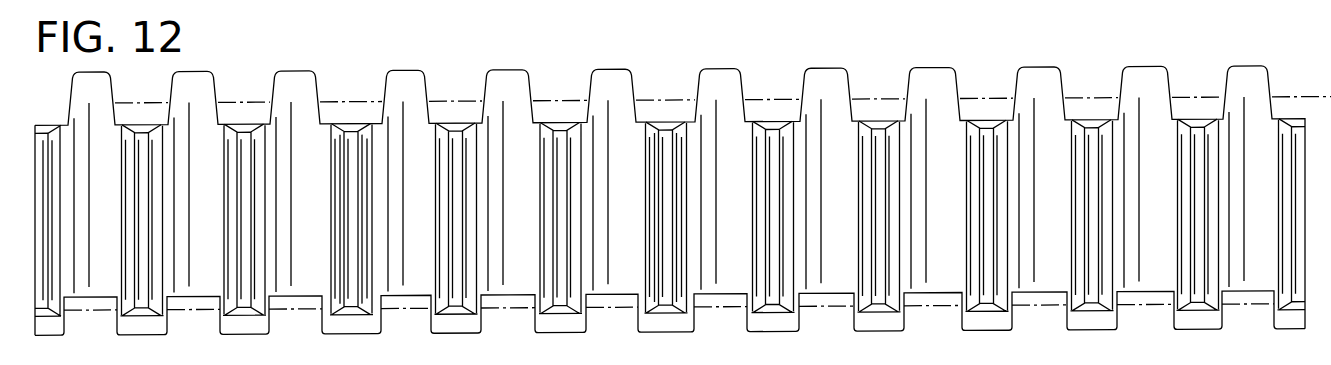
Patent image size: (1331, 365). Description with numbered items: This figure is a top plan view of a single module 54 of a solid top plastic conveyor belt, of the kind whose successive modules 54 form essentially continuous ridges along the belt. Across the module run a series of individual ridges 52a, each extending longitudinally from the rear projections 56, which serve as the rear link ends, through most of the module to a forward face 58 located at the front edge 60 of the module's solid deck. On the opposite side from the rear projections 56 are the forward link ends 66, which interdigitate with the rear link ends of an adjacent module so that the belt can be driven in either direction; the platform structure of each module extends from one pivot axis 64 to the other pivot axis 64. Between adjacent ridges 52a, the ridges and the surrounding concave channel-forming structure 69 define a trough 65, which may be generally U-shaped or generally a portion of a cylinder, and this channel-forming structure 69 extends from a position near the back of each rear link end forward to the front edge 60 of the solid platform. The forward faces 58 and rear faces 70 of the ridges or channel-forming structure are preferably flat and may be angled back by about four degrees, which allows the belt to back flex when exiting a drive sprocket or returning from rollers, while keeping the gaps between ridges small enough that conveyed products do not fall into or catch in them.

The module 54 is at (262, 53).
The individual ridge 52a is at (352, 134).
The rear projections 56 is at (555, 333).
The forward face 58 is at (772, 128).
The front edge 60 is at (450, 130).
The pivot axis 64 is at (1205, 97).
The trough 65 is at (824, 150).
The forward link ends 66 is at (617, 75).
The concave channel-forming structure 69 is at (340, 221).
The rear face 70 is at (771, 313).